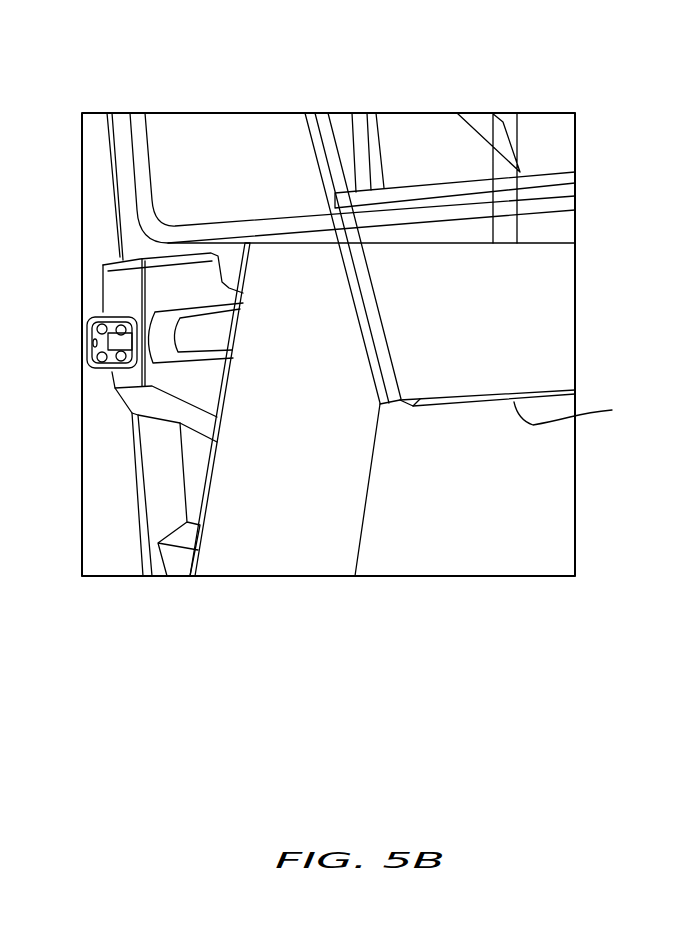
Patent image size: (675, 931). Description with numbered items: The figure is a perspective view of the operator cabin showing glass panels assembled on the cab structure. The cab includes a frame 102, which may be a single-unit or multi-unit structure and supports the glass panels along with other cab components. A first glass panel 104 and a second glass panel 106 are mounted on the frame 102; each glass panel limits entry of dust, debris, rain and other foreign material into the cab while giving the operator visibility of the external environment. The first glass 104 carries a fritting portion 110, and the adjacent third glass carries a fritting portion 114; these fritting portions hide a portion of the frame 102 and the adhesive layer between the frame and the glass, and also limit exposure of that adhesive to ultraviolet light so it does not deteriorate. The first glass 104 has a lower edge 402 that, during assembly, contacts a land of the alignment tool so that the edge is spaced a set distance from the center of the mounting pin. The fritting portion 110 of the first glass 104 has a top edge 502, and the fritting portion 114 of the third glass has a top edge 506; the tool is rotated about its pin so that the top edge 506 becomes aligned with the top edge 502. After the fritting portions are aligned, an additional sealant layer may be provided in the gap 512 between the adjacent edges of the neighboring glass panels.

The frame 102 is at (512, 552).
The first glass panel 104 is at (552, 138).
The second glass panel 106 is at (100, 510).
The fritting portion 110 is at (550, 317).
The fritting portion 114 is at (275, 552).
The lower edge 402 is at (587, 414).
The top edge 502 is at (447, 240).
The top edge 506 is at (288, 243).
The gap 512 is at (360, 290).